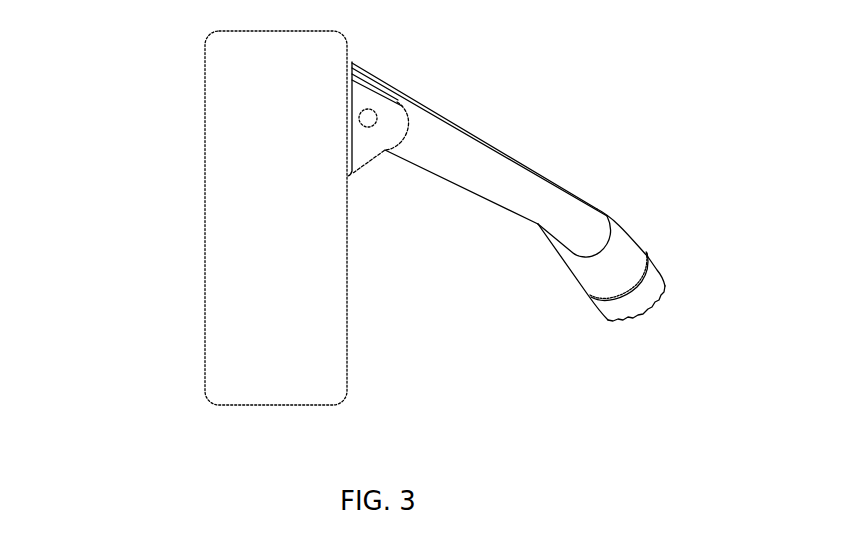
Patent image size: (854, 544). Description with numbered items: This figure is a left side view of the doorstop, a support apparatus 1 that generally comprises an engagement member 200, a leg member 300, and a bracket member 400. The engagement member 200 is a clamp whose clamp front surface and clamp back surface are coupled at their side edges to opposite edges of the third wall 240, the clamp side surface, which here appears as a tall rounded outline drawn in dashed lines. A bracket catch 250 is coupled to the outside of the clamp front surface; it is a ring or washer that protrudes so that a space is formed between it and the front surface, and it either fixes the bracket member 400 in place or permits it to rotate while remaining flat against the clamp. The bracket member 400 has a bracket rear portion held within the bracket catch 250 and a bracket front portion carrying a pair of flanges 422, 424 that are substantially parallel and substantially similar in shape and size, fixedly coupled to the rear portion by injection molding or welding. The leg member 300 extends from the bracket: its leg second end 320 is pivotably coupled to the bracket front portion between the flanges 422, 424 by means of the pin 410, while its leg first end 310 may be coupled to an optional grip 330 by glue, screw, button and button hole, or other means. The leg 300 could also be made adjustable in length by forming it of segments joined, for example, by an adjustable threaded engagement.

The support apparatus 1 is at (172, 120).
The engagement member 200 is at (178, 212).
The third wall 240 is at (335, 330).
The bracket catch 250 is at (352, 62).
The leg member 300 is at (537, 142).
The leg first end 310 is at (618, 252).
The leg second end 320 is at (395, 148).
The grip 330 is at (640, 297).
The bracket member 400 is at (403, 77).
The pin 410 is at (377, 113).
The flange 422 is at (355, 166).
The flange 424 is at (372, 72).